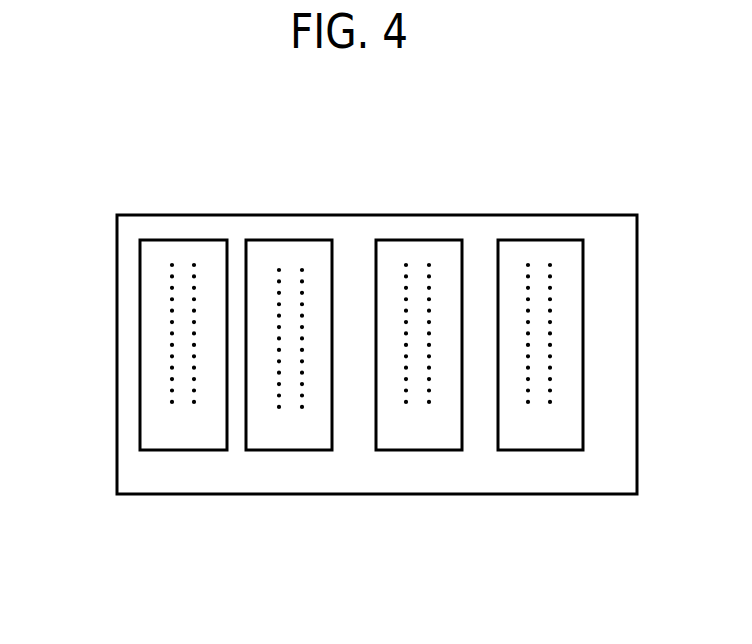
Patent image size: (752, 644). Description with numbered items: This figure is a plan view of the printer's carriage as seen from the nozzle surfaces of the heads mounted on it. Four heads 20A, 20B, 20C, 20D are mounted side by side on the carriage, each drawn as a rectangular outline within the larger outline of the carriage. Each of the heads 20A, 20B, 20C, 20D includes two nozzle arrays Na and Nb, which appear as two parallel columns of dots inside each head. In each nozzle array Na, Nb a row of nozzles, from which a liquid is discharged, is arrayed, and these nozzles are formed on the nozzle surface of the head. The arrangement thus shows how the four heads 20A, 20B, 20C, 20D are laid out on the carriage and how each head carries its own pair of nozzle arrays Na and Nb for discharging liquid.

The head 20A is at (148, 341).
The head 20B is at (291, 250).
The head 20C is at (421, 250).
The head 20D is at (540, 250).
The nozzle array Na is at (170, 395).
The nozzle array Nb is at (194, 400).